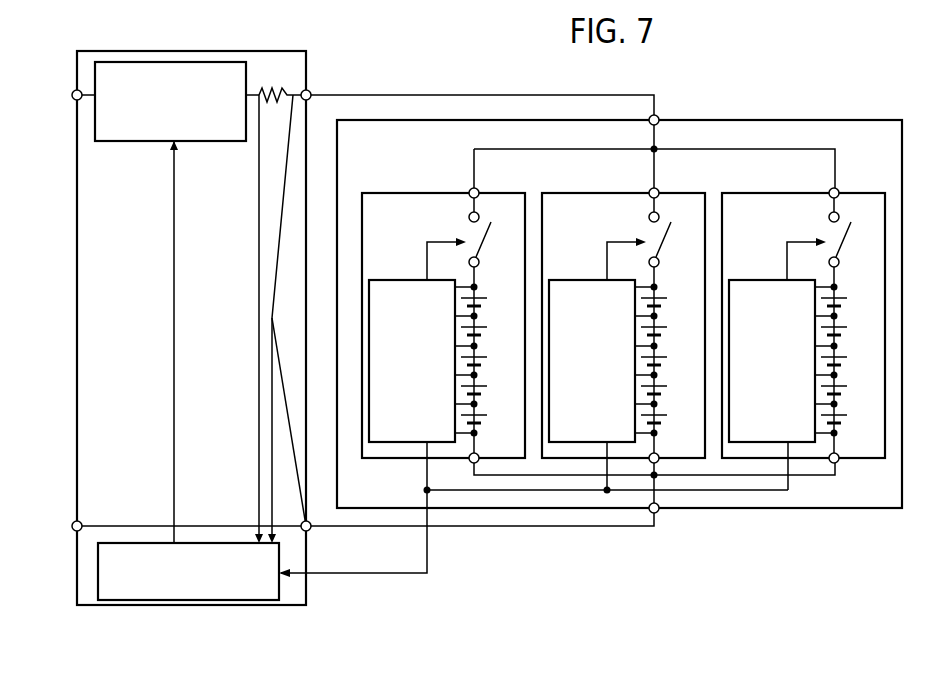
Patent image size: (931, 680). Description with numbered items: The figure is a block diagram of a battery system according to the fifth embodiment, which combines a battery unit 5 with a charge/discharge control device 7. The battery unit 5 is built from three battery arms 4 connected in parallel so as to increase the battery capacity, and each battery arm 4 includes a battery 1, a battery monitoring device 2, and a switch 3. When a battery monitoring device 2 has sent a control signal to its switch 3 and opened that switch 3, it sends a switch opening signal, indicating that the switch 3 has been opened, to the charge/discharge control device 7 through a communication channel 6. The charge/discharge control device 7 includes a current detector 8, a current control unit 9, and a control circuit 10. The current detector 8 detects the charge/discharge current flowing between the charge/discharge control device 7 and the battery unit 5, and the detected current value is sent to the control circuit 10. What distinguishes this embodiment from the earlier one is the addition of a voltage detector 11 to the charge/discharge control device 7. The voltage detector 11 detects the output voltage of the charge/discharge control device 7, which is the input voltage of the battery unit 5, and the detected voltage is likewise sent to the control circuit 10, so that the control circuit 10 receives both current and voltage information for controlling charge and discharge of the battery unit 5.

The battery 1 is at (486, 314).
The battery monitoring device 2 is at (400, 280).
The switch 3 is at (482, 237).
The battery arm 4 is at (415, 193).
The battery unit 5 is at (710, 120).
The communication channel 6 is at (340, 573).
The charge/discharge control device 7 is at (140, 51).
The current detector 8 is at (269, 88).
The current control unit 9 is at (123, 141).
The control circuit 10 is at (133, 543).
The voltage detector 11 is at (280, 228).